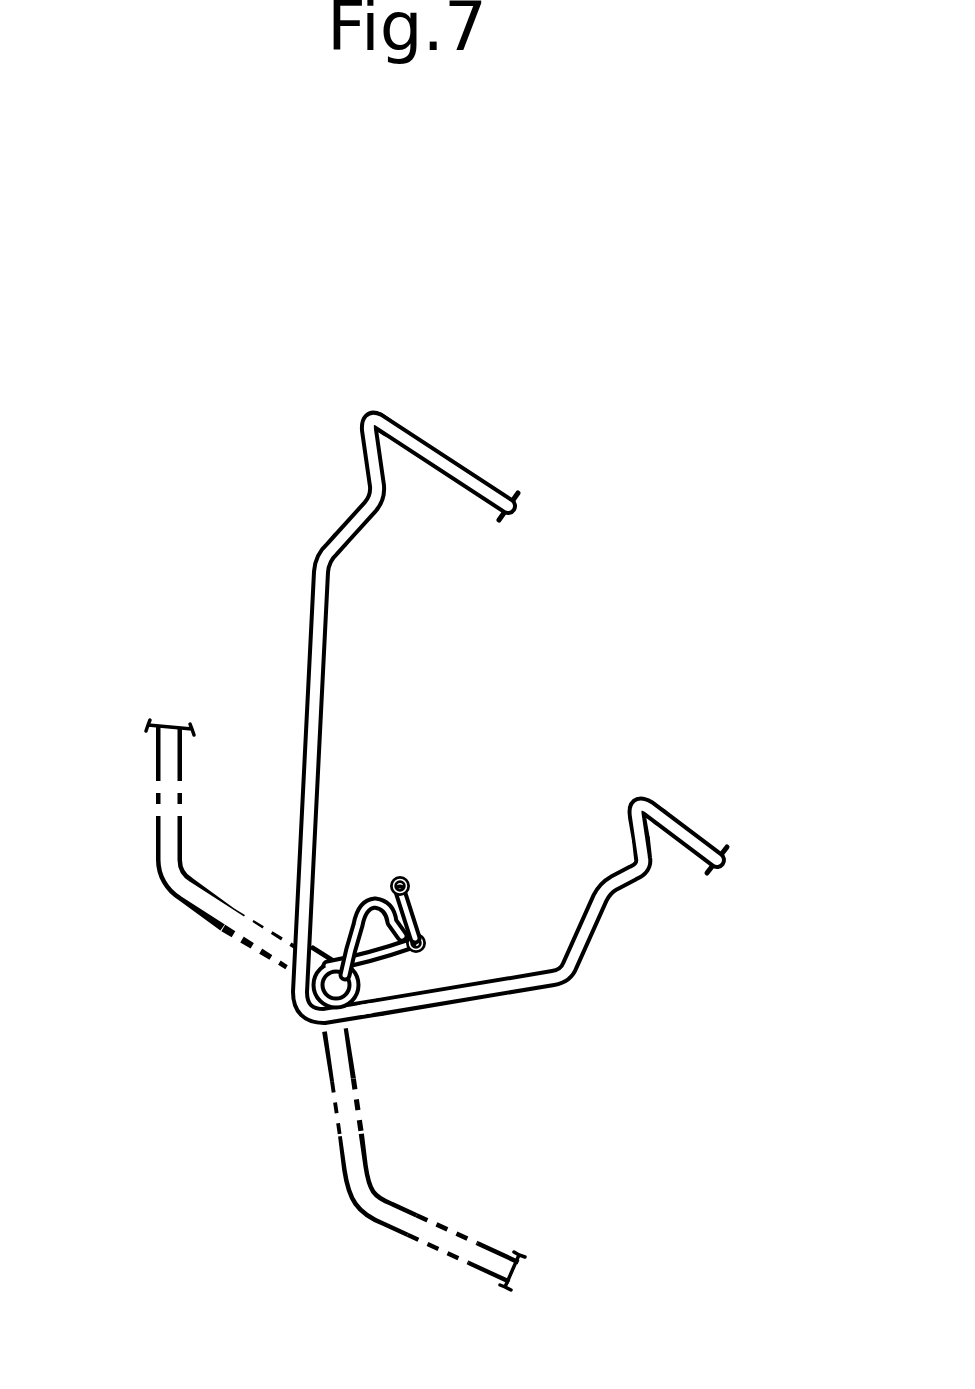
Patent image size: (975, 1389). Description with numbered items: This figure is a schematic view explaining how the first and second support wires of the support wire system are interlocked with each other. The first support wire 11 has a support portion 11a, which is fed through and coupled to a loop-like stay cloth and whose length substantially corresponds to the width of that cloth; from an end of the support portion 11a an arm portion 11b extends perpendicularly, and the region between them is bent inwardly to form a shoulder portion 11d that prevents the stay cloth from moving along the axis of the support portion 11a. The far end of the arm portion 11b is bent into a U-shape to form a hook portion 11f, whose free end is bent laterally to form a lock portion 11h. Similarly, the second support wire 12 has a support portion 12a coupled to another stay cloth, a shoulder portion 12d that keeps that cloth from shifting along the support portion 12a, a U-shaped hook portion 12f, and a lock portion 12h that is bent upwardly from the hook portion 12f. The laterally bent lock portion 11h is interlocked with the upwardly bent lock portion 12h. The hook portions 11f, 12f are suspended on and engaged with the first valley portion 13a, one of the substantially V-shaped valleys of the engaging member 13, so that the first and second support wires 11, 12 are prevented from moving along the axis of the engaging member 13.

The first support wire 11 is at (338, 638).
The support portion 11a is at (447, 452).
The arm portion 11b is at (327, 690).
The shoulder portion 11d is at (358, 419).
The hook portion 11f is at (290, 979).
The lock portion 11h is at (421, 932).
The second support wire 12 is at (587, 848).
The support portion 12a is at (693, 817).
The shoulder portion 12d is at (627, 828).
The hook portion 12f is at (318, 955).
The lock portion 12h is at (418, 884).
The engaging member 13 is at (295, 1018).
The first valley portion 13a is at (338, 1052).